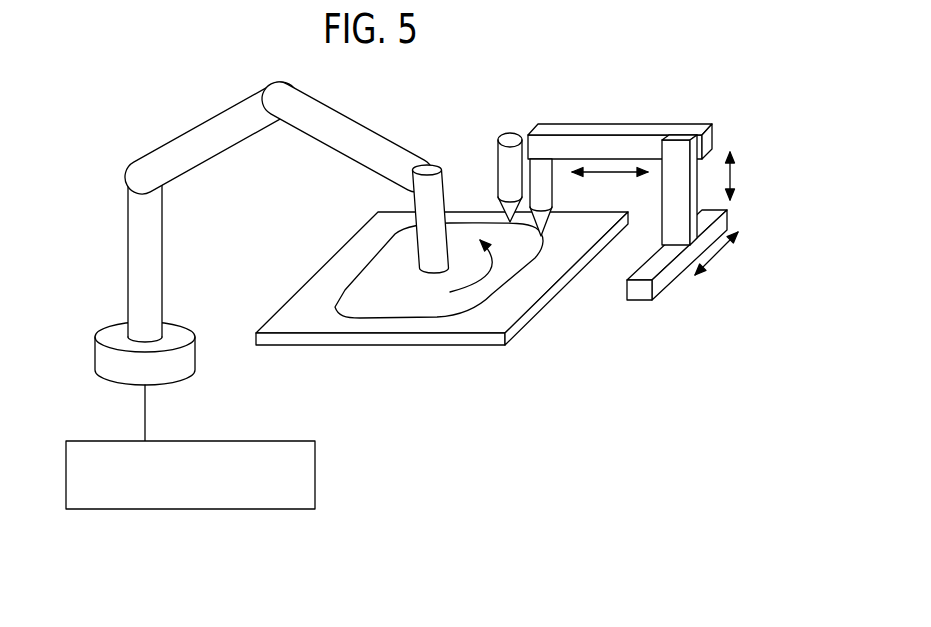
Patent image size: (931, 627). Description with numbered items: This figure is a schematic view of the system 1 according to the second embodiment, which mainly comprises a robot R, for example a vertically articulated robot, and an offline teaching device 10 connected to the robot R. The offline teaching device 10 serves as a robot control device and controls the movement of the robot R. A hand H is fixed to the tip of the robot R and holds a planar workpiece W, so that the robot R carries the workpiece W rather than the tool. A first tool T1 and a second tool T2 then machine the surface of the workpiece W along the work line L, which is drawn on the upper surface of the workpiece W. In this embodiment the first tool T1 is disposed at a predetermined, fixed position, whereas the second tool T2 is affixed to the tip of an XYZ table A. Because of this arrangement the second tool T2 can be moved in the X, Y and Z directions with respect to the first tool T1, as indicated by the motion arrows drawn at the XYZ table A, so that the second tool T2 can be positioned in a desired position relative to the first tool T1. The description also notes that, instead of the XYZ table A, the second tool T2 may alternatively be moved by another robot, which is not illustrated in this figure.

The system 1 is at (623, 353).
The offline teaching device 10 is at (315, 468).
The robot R is at (140, 243).
The hand H is at (428, 250).
The first tool T1 is at (505, 160).
The second tool T2 is at (545, 192).
The XYZ table A is at (718, 222).
The workpiece W is at (513, 317).
The work line L is at (427, 318).